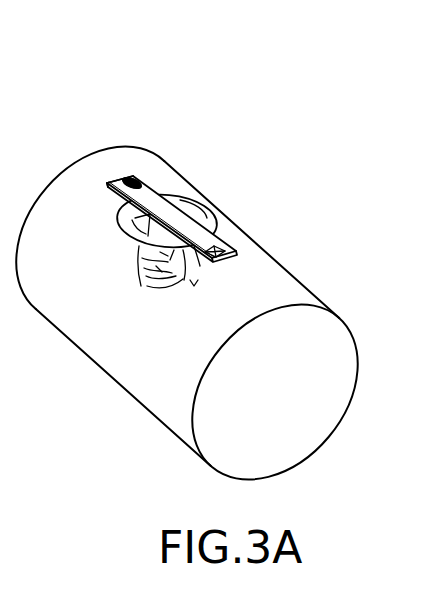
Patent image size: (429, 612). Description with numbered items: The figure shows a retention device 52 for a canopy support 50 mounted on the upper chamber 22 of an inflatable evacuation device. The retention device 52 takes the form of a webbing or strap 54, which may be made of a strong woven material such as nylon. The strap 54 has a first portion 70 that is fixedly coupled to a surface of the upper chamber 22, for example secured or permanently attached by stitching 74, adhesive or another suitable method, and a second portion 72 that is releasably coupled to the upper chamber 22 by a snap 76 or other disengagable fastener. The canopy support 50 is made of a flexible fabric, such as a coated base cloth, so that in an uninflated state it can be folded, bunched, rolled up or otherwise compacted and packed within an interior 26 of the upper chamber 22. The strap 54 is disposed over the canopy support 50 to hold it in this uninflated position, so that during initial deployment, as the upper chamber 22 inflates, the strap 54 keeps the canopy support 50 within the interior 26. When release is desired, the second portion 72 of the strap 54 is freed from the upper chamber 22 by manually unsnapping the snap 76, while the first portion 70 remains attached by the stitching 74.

The upper chamber 22 is at (158, 405).
The interior 26 is at (325, 421).
The canopy support 50 is at (121, 275).
The retention device 52 is at (167, 211).
The strap 54 is at (218, 240).
The first portion 70 is at (243, 273).
The second portion 72 is at (97, 171).
The stitching 74 is at (212, 264).
The snap 76 is at (126, 178).